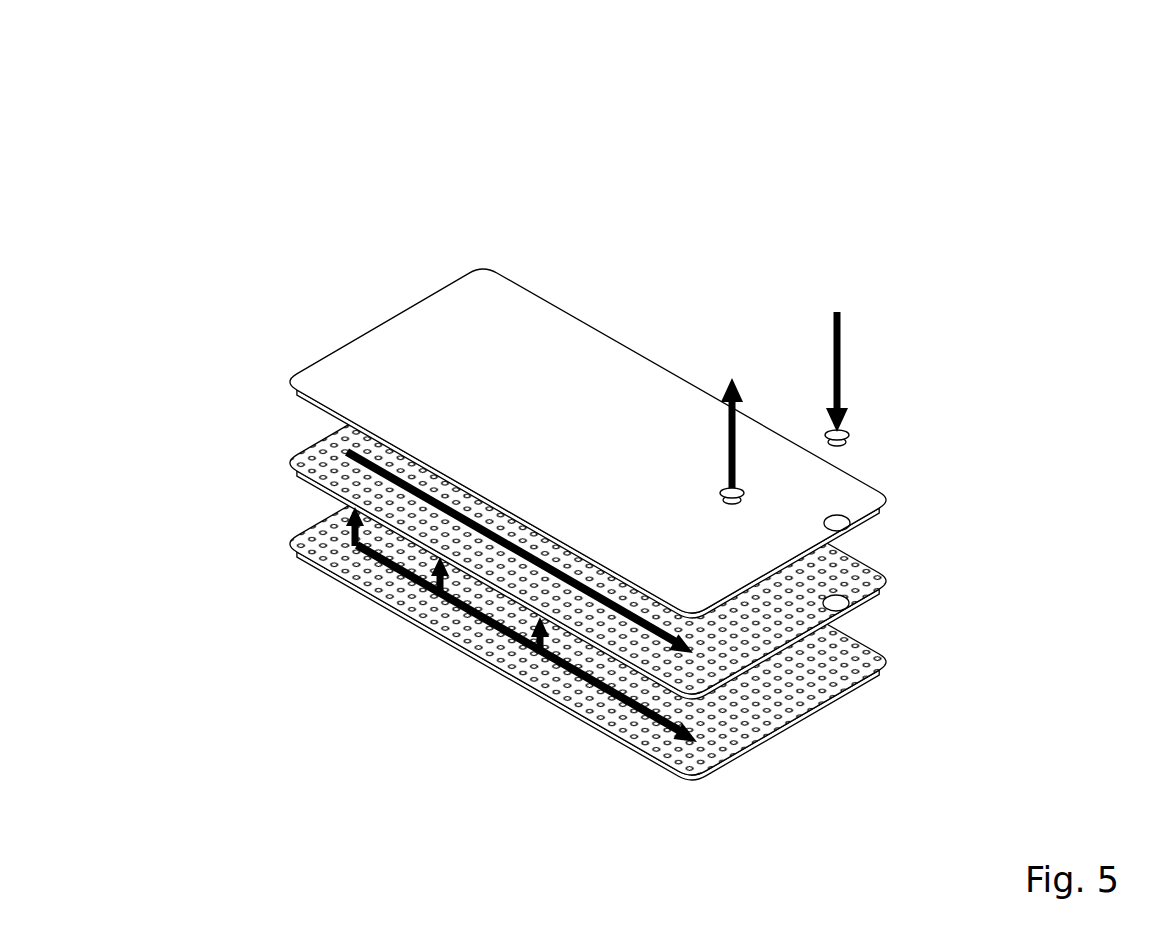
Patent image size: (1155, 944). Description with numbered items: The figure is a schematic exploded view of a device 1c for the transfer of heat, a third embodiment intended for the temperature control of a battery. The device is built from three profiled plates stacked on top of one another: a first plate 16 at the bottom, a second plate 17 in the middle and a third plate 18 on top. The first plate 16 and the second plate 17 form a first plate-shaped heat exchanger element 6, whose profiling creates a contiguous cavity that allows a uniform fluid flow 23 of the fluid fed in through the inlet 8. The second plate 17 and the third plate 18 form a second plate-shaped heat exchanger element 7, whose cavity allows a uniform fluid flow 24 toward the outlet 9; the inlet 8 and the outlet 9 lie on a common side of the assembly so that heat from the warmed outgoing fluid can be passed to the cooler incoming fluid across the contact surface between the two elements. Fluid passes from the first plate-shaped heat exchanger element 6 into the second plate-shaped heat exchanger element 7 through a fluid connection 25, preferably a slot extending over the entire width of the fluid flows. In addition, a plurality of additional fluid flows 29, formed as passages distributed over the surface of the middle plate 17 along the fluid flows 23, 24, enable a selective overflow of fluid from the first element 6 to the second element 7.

The device for the transfer of heat 1c is at (810, 136).
The first plate-shaped heat exchanger element 6 is at (278, 462).
The second plate-shaped heat exchanger element 7 is at (278, 382).
The inlet 8 is at (843, 313).
The outlet 9 is at (718, 453).
The first plate 16 is at (897, 672).
The second plate 17 is at (895, 588).
The third plate 18 is at (898, 496).
The fluid flow 23 is at (717, 747).
The fluid flow 24 is at (713, 657).
The fluid connection 25 is at (348, 583).
The additional fluid flows 29 is at (427, 632).